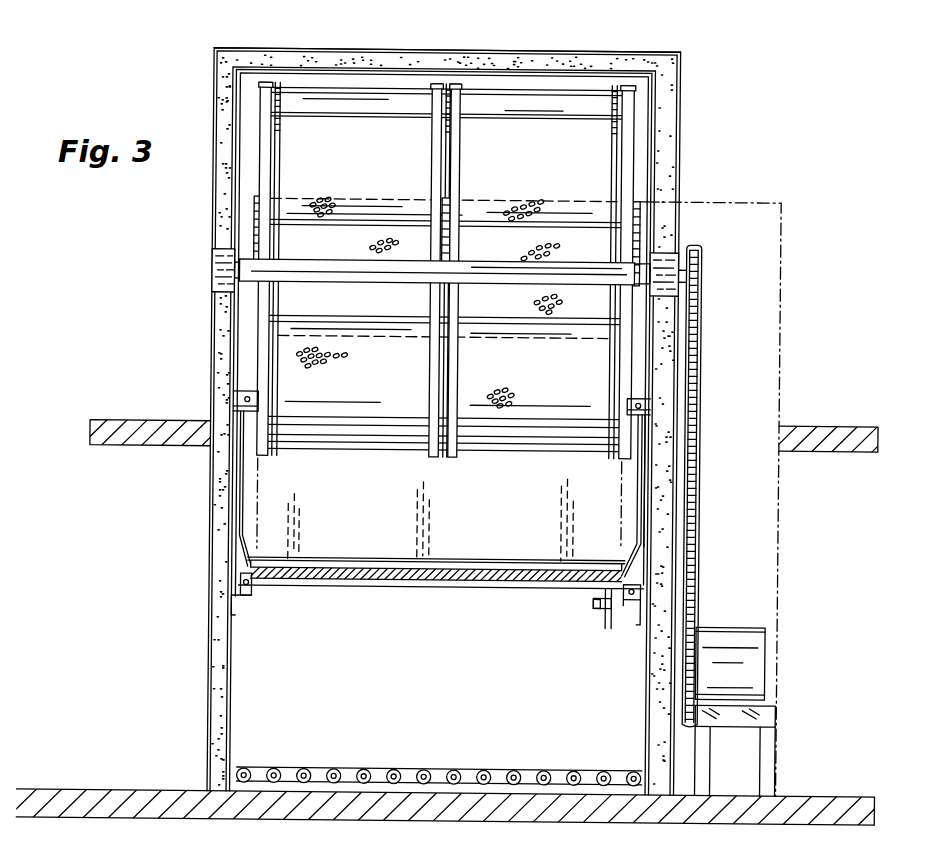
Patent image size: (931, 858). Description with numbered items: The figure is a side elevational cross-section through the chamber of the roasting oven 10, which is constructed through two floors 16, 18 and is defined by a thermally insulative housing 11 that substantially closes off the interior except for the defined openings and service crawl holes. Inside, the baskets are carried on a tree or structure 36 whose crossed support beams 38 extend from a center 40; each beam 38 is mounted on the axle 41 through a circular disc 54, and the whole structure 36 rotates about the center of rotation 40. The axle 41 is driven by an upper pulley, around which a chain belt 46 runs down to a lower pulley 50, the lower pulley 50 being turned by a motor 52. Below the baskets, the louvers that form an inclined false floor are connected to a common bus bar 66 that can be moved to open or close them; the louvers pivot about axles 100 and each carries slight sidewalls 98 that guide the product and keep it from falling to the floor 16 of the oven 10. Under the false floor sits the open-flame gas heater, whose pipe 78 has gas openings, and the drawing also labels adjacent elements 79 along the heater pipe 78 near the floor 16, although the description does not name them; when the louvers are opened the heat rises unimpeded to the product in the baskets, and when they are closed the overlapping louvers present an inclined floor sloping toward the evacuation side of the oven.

The roasting oven 10 is at (606, 37).
The thermally insulative housing 11 is at (680, 134).
The floor 16 is at (793, 800).
The floor 18 is at (811, 434).
The tree or structure 36 is at (216, 233).
The crossed support beams 38 is at (456, 84).
The center 40 is at (214, 280).
The axle 41 is at (334, 285).
The chain belt 46 is at (701, 316).
The lower pulley 50 is at (696, 623).
The motor 52 is at (748, 663).
The circular disc 54 is at (258, 213).
The common bus bar 66 is at (607, 622).
The pipe 78 is at (433, 766).
The rollers 79 is at (312, 768).
The sidewalls 98 is at (240, 551).
The axles 100 is at (432, 592).